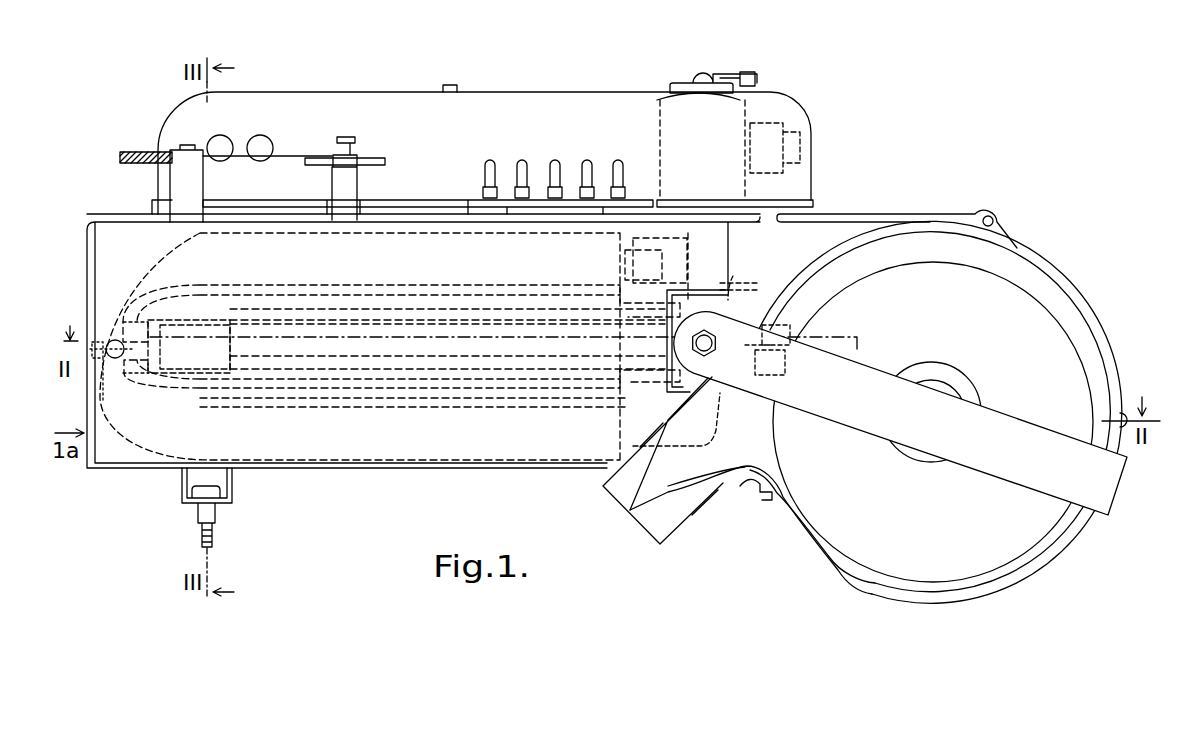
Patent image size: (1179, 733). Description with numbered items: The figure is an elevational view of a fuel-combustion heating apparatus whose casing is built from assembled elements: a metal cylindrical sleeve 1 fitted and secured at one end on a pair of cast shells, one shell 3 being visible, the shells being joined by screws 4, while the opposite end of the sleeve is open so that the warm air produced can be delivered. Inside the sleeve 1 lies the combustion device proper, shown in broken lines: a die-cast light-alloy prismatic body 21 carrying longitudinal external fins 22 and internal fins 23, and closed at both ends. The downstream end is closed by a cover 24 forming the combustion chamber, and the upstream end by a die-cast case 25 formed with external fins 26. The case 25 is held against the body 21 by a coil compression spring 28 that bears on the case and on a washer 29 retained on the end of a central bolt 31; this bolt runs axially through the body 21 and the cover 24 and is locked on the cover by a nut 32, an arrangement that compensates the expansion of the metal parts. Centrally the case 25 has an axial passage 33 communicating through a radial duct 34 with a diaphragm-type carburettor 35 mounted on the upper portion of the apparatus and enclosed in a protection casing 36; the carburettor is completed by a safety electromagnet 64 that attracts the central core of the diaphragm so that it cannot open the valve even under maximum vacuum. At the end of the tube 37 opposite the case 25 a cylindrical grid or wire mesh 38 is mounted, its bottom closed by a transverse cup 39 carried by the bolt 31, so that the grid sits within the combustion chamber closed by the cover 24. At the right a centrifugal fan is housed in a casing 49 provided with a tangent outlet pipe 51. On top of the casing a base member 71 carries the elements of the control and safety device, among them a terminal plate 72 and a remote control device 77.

The cylindrical sleeve 1 is at (137, 452).
The cast shell 3 is at (860, 226).
The screws 4 is at (995, 220).
The prismatic body 21 is at (463, 283).
The external fins 22 is at (385, 234).
The internal fins 23 is at (503, 297).
The cover 24 is at (129, 318).
The case 25 is at (663, 281).
The external fins 26 is at (624, 238).
The coil compression spring 28 is at (766, 355).
The washer 29 is at (778, 330).
The central bolt 31 is at (458, 392).
The nut 32 is at (111, 385).
The axial passage 33 is at (721, 395).
The radial duct 34 is at (735, 278).
The diaphragm-type carburettor 35 is at (680, 82).
The protection casing 36 is at (784, 106).
The tube 37 is at (316, 372).
The cylindrical grid 38 is at (211, 374).
The transverse cup 39 is at (160, 378).
The fan casing 49 is at (897, 565).
The tangent outlet pipe 51 is at (630, 516).
The safety electromagnet 64 is at (800, 129).
The base member 71 is at (408, 200).
The terminal plate 72 is at (481, 197).
The remote control device 77 is at (293, 152).